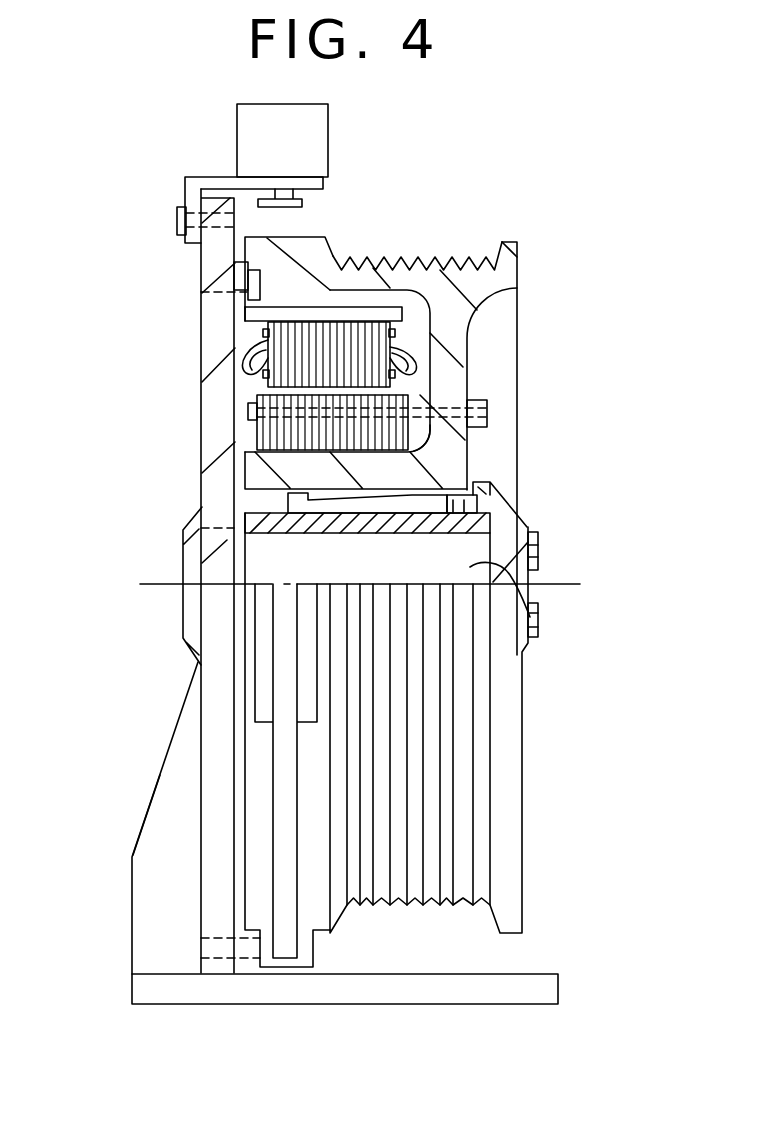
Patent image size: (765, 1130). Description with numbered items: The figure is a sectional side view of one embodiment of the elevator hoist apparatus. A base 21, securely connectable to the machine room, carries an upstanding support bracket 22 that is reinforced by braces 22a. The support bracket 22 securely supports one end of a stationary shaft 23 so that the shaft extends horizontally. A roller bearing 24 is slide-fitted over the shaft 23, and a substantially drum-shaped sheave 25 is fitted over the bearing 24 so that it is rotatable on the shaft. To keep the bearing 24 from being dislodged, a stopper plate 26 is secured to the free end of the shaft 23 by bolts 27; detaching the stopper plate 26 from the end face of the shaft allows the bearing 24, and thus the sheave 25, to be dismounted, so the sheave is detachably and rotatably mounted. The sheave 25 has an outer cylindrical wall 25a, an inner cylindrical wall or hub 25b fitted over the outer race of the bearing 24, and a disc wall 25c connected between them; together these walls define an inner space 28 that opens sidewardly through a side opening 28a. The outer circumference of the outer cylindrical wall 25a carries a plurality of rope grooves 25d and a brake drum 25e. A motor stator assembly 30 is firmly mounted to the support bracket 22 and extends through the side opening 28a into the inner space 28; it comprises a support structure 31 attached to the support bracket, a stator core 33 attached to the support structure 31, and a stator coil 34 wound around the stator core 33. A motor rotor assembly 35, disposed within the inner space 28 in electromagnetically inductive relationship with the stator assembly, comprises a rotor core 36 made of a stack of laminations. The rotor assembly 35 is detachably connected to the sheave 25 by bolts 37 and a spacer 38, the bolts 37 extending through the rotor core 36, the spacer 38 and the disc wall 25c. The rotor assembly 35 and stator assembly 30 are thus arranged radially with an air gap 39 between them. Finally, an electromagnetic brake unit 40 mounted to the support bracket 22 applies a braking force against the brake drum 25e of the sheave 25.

The base 21 is at (460, 1005).
The support bracket 22 is at (200, 822).
The braces 22a is at (150, 918).
The stationary shaft 23 is at (530, 617).
The roller bearing 24 is at (422, 527).
The sheave 25 is at (517, 243).
The outer cylindrical wall 25a is at (418, 278).
The hub 25b is at (263, 473).
The disc wall 25c is at (470, 386).
The rope grooves 25d is at (452, 258).
The brake drum 25e is at (310, 238).
The stopper plate 26 is at (510, 497).
The bolts 27 is at (540, 547).
The inner space 28 is at (423, 353).
The side opening 28a is at (253, 325).
The motor stator assembly 30 is at (362, 306).
The support structure 31 is at (234, 268).
The stator core 33 is at (290, 338).
The stator coil 34 is at (258, 357).
The motor rotor assembly 35 is at (273, 435).
The rotor core 36 is at (393, 430).
The bolts 37 is at (477, 403).
The spacer 38 is at (423, 432).
The air gap 39 is at (263, 388).
The electromagnetic brake unit 40 is at (237, 136).